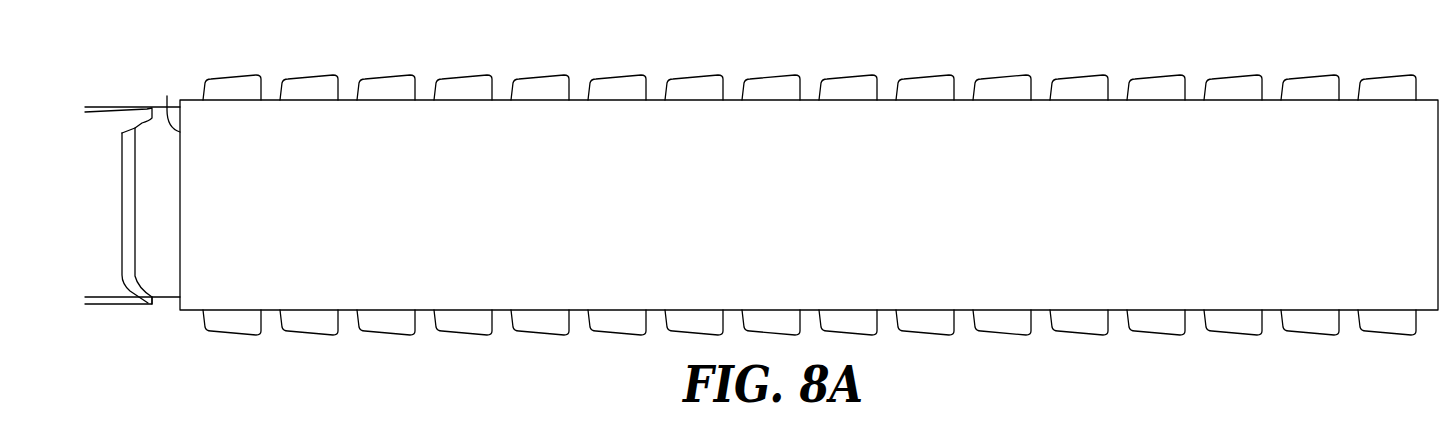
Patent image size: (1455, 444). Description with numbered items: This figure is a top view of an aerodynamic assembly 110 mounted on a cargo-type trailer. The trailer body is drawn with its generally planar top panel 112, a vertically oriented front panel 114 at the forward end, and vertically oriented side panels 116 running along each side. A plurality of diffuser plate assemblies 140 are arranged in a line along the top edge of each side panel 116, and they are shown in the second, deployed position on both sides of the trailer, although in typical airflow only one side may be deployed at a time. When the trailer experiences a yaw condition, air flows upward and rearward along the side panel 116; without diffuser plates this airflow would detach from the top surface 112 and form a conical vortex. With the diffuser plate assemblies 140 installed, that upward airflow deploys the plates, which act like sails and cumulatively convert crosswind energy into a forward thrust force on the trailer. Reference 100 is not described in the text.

The housing end 100 is at (108, 128).
The aerodynamic assembly 110 is at (809, 230).
The top panel 112 is at (960, 120).
The front panel 114 is at (167, 96).
The side panel 116 is at (582, 314).
The diffuser plate assembly 140 is at (288, 72).